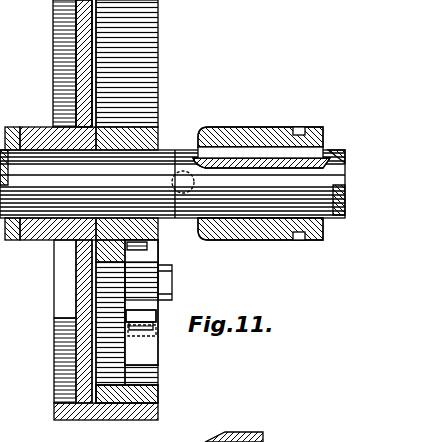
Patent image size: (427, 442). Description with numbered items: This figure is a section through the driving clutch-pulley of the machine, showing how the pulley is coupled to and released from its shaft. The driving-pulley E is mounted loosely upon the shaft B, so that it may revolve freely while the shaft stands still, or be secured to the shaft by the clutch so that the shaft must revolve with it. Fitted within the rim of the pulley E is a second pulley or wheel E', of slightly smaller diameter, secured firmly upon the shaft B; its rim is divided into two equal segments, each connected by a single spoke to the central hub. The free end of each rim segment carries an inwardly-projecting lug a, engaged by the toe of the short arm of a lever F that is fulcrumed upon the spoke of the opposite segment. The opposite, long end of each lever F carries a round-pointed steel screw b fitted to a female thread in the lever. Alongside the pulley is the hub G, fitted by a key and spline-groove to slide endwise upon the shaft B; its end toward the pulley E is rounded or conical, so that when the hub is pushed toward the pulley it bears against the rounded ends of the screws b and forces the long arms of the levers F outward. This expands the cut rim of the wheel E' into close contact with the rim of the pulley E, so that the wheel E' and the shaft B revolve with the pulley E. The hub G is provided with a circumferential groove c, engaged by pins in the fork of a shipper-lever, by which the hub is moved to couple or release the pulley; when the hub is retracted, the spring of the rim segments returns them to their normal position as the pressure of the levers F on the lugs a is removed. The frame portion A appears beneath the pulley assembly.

The driving-pulley E is at (81, 221).
The second pulley or wheel E' is at (129, 201).
The shaft B is at (172, 184).
The round-pointed steel screw b is at (181, 177).
The lever F is at (200, 218).
The inwardly-projecting lug a is at (152, 352).
The hub G is at (261, 175).
The circumferential groove c is at (299, 183).
The frame A is at (248, 432).